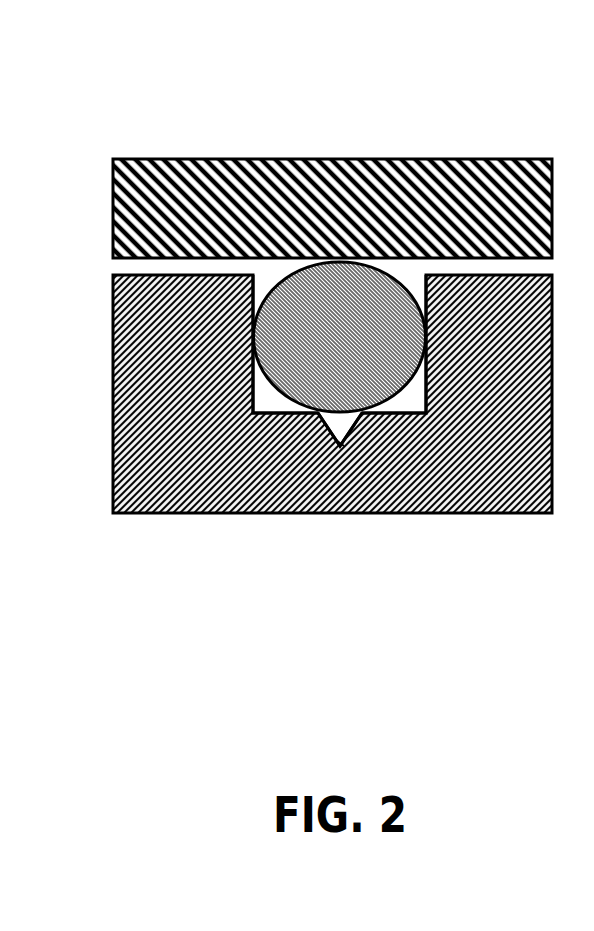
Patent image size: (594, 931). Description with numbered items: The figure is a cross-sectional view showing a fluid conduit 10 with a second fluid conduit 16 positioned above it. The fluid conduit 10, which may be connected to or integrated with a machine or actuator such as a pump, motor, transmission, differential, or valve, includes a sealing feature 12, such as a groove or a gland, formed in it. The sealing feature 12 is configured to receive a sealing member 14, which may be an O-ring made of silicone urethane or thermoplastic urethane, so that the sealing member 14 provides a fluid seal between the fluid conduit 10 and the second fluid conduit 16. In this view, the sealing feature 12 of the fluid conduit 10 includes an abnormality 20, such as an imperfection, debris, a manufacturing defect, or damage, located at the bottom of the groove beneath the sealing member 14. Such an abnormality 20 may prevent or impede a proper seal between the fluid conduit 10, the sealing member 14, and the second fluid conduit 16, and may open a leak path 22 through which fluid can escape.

The fluid conduit 10 is at (507, 517).
The sealing feature 12 is at (250, 283).
The sealing member 14 is at (390, 380).
The second fluid conduit 16 is at (138, 158).
The abnormality 20 is at (323, 428).
The leak path 22 is at (345, 425).